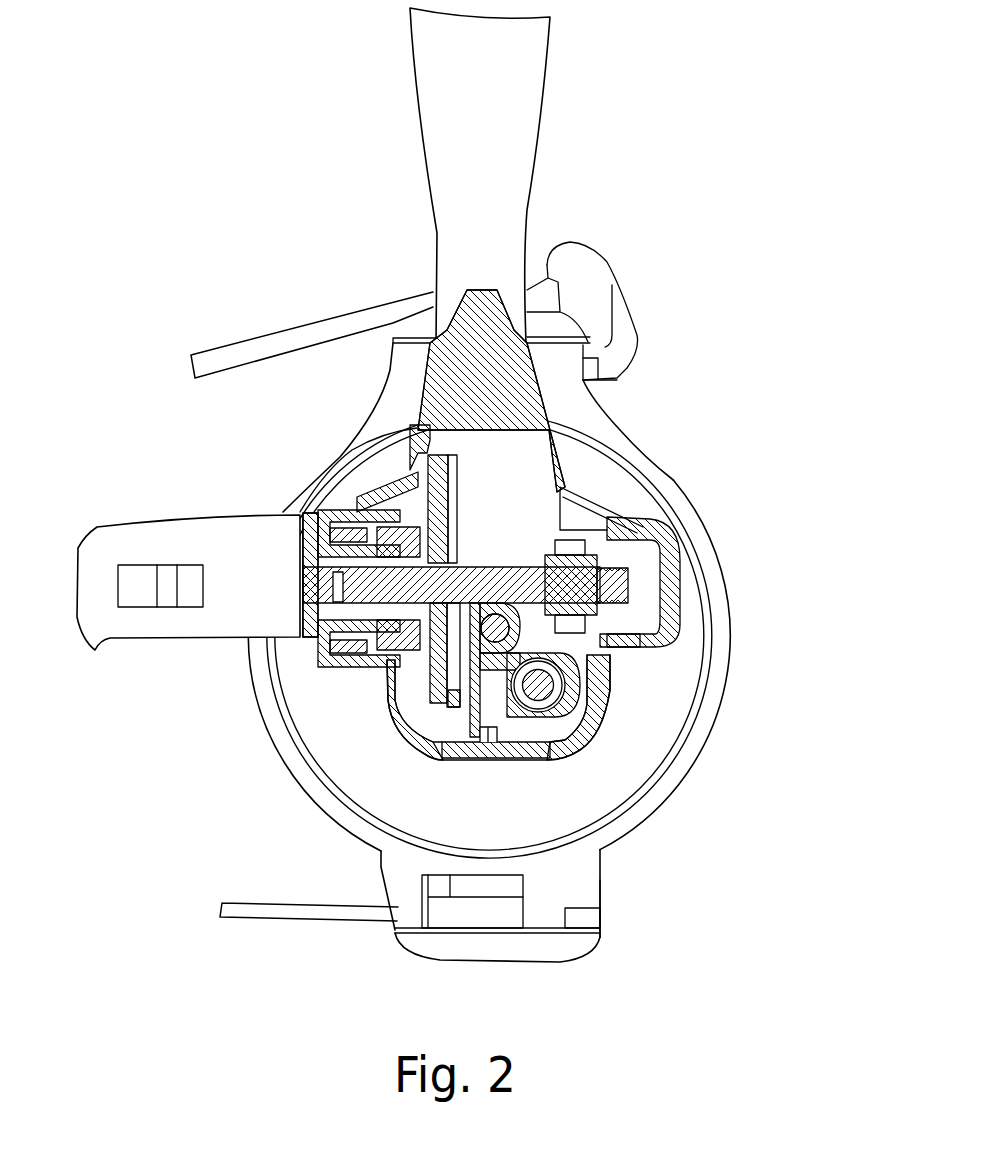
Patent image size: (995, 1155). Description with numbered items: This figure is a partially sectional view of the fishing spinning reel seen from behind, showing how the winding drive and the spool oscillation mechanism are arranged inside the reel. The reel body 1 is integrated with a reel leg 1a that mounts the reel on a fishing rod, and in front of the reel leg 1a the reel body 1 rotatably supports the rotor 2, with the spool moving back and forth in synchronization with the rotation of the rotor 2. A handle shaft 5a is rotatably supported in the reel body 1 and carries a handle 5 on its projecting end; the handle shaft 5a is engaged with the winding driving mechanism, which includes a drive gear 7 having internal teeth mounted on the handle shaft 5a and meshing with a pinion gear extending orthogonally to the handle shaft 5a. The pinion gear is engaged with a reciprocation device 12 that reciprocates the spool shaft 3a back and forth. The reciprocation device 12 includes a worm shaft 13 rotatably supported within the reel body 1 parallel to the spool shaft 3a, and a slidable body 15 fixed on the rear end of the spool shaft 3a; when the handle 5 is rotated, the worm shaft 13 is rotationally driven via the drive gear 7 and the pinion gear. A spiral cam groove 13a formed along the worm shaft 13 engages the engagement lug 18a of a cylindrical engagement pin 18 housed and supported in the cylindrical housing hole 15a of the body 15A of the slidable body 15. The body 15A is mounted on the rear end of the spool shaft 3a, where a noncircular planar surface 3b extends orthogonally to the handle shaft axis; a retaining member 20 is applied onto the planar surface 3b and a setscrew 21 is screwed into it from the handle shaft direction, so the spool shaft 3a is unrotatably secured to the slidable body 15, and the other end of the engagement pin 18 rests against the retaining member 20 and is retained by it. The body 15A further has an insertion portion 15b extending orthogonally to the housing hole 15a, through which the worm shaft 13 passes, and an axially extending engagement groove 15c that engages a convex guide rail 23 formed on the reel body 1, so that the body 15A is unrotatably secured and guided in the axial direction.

The reel body 1 is at (570, 527).
The reel leg 1a is at (520, 124).
The rotor 2 is at (720, 577).
The spool shaft 3a is at (493, 617).
The planar surface 3b is at (378, 528).
The handle 5 is at (93, 545).
The handle shaft 5a is at (642, 535).
The drive gear 7 is at (455, 490).
The reciprocation device 12 is at (580, 745).
The worm shaft 13 is at (693, 767).
The cam groove 13a is at (588, 676).
The slidable body 15 is at (445, 745).
The housing hole 15a is at (430, 708).
The body 15A is at (572, 720).
The insertion portion 15b is at (600, 636).
The engagement groove 15c is at (485, 742).
The engagement pin 18 is at (465, 731).
The engagement lug 18a is at (603, 892).
The retaining member 20 is at (370, 690).
The setscrew 21 is at (360, 660).
The convex guide rail 23 is at (522, 757).